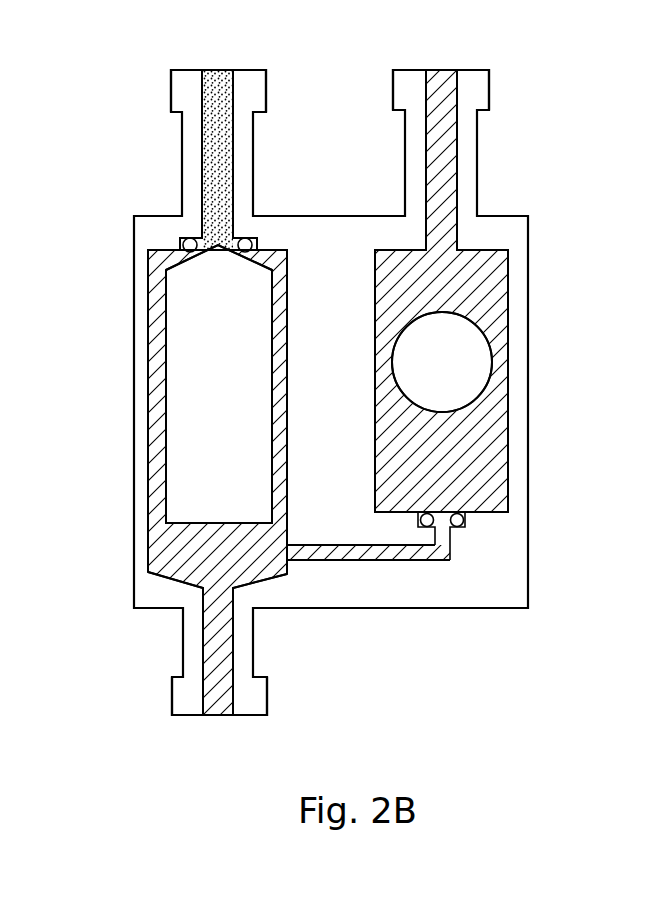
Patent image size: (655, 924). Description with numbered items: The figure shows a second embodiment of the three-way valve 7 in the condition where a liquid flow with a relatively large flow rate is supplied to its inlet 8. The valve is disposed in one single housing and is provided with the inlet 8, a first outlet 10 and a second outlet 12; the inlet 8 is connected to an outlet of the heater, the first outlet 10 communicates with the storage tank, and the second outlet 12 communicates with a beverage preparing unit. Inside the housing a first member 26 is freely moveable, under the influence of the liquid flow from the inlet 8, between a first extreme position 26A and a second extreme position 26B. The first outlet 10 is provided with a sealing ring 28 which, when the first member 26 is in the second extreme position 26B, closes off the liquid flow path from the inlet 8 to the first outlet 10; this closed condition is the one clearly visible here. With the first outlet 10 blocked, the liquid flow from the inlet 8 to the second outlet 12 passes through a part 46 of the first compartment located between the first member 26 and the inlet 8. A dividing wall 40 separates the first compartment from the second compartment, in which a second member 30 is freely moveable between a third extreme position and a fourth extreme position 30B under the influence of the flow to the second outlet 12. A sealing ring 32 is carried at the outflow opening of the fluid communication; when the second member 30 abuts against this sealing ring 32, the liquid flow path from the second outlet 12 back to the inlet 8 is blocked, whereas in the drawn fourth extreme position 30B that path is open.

The three-way valve 7 is at (530, 542).
The inlet 8 is at (218, 715).
The first outlet 10 is at (235, 70).
The second outlet 12 is at (457, 70).
The first member 26 is at (188, 415).
The first extreme position 26A is at (178, 568).
The second extreme position 26B is at (225, 245).
The sealing ring 28 is at (182, 240).
The second member 30 is at (470, 370).
The fourth extreme position 30B is at (447, 240).
The sealing ring 32 is at (463, 527).
The dividing wall 40 is at (343, 235).
The part of the first compartment 46 is at (238, 558).